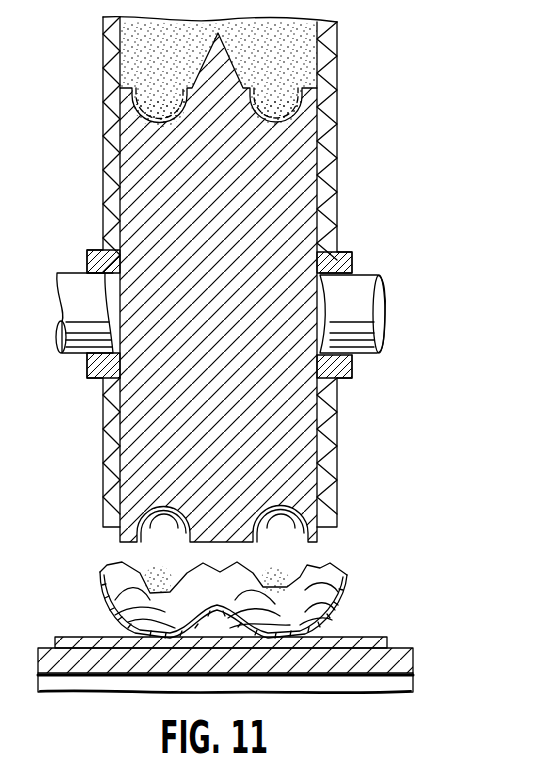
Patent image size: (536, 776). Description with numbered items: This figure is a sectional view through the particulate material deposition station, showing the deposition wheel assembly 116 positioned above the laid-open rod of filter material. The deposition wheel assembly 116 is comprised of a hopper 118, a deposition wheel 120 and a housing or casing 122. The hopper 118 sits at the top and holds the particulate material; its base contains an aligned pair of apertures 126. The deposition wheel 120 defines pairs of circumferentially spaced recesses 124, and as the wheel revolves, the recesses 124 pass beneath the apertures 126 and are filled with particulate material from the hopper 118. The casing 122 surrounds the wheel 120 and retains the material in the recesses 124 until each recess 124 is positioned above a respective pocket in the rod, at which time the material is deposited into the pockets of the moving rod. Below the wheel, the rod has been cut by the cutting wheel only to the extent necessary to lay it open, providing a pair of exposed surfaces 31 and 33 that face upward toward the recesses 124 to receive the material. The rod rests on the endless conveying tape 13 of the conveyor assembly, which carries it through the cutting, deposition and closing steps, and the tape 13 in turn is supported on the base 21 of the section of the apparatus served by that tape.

The hopper 118 is at (337, 33).
The apertures 126 is at (160, 90).
The recesses 124 is at (303, 107).
The deposition wheel assembly 116 is at (338, 167).
The casing 122 is at (337, 415).
The deposition wheel 120 is at (300, 457).
The exposed surface 31 is at (137, 565).
The exposed surface 33 is at (306, 566).
The endless conveying tape 13 is at (363, 637).
The base 21 is at (77, 662).